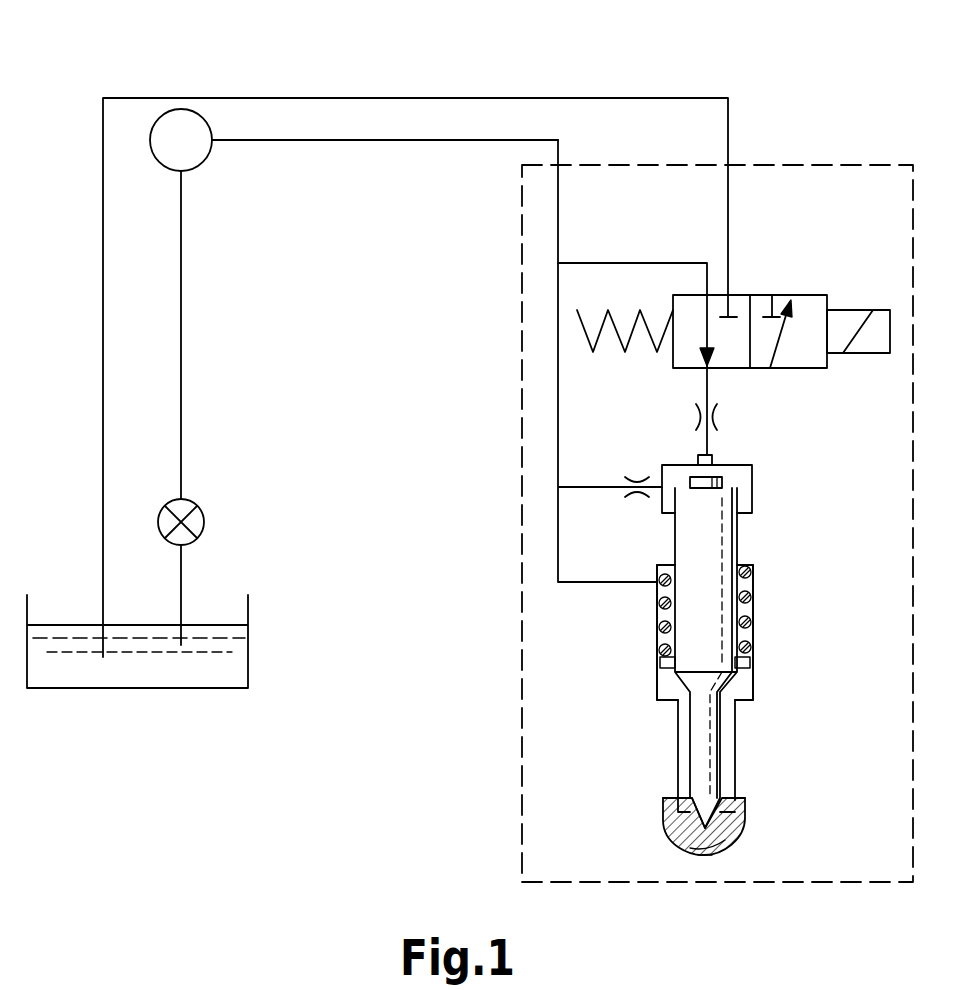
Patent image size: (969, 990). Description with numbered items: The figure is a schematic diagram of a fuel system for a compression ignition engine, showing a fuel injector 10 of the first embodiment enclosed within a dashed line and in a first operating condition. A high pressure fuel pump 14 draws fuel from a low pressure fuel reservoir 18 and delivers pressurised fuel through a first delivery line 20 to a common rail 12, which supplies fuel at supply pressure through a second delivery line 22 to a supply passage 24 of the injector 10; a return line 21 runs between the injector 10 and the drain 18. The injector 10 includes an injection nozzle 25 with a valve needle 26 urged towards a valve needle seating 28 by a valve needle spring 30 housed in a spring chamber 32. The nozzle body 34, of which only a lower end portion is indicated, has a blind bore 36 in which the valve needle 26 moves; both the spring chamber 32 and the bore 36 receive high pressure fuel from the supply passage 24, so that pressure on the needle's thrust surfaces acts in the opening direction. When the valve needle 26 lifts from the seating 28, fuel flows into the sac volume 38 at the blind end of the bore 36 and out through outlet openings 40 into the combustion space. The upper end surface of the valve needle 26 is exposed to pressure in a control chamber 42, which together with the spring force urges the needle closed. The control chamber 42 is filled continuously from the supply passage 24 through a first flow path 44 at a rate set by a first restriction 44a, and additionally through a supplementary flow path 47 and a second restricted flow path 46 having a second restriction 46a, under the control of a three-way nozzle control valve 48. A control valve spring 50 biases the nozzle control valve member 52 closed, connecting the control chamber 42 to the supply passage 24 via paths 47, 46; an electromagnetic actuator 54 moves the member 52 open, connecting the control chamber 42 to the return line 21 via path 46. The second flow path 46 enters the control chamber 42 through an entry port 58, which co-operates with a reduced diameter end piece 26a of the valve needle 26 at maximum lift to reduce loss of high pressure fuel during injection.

The fuel injector 10 is at (523, 585).
The common rail 12 is at (187, 145).
The high pressure fuel pump 14 is at (230, 521).
The low pressure fuel reservoir 18 is at (212, 668).
The first delivery line 20 is at (182, 365).
The return line 21 is at (422, 97).
The second delivery line 22 is at (393, 142).
The supply passage 24 is at (557, 231).
The injection nozzle 25 is at (627, 694).
The valve needle 26 is at (706, 752).
The reduced diameter end piece 26a is at (693, 486).
The valve needle seating 28 is at (746, 803).
The valve needle spring 30 is at (745, 593).
The spring chamber 32 is at (753, 633).
The nozzle body 34 is at (667, 807).
The blind bore 36 is at (727, 735).
The sac volume 38 is at (720, 828).
The outlet openings 40 is at (727, 848).
The control chamber 42 is at (740, 480).
The first flow path 44 is at (577, 487).
The first restriction 44a is at (645, 496).
The second restricted flow path 46 is at (707, 393).
The second restriction 46a is at (712, 413).
The supplementary flow path 47 is at (638, 262).
The nozzle control valve 48 is at (788, 265).
The control valve spring 50 is at (637, 327).
The nozzle control valve member 52 is at (757, 295).
The electromagnetic actuator 54 is at (862, 294).
The entry port 58 is at (712, 460).